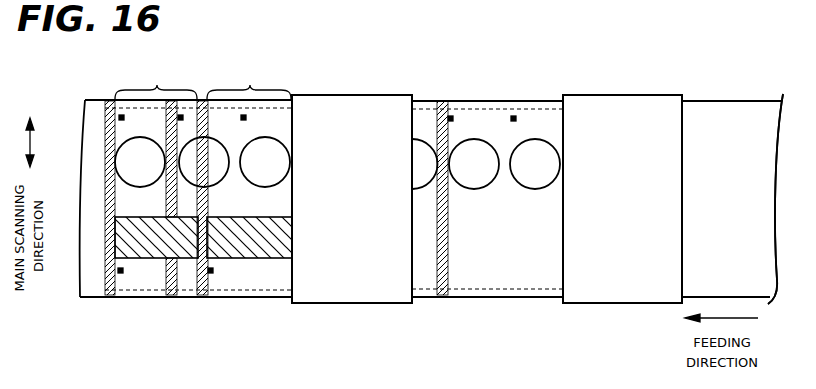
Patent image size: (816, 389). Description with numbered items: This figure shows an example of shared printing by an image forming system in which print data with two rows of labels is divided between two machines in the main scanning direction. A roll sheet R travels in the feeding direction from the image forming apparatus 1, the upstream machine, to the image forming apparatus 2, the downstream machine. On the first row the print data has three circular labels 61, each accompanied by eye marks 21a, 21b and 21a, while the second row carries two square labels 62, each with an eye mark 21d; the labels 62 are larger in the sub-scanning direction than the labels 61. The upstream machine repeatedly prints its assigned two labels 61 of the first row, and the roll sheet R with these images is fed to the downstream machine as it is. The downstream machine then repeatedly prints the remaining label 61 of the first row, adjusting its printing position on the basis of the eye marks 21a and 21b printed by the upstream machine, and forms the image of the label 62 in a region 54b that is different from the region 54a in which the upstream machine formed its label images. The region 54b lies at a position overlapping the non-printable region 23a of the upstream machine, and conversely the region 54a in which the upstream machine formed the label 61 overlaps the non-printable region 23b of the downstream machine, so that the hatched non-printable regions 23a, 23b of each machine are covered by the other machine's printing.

The image forming apparatus 1 is at (623, 95).
The image forming apparatus 2 is at (349, 95).
The roll sheet R is at (751, 101).
The eye mark 21a is at (121, 115).
The eye mark 21b is at (180, 115).
The eye mark 21d is at (121, 273).
The non-printable region 23a is at (172, 297).
The non-printable region 23b is at (109, 297).
The region 54a is at (549, 109).
The region 54b is at (203, 83).
The label 61 is at (143, 150).
The label 62 is at (160, 258).